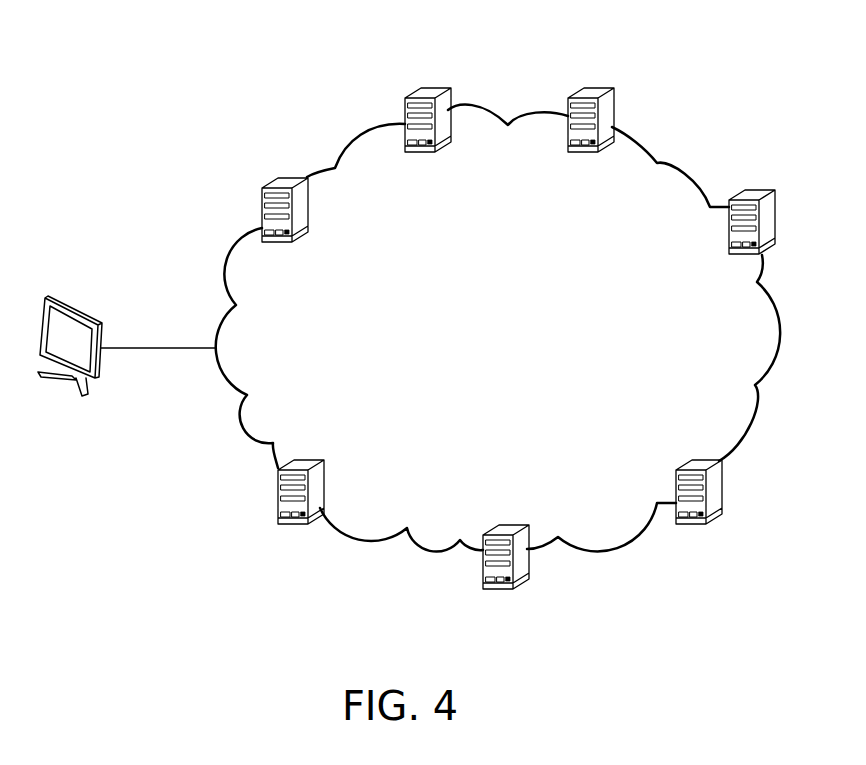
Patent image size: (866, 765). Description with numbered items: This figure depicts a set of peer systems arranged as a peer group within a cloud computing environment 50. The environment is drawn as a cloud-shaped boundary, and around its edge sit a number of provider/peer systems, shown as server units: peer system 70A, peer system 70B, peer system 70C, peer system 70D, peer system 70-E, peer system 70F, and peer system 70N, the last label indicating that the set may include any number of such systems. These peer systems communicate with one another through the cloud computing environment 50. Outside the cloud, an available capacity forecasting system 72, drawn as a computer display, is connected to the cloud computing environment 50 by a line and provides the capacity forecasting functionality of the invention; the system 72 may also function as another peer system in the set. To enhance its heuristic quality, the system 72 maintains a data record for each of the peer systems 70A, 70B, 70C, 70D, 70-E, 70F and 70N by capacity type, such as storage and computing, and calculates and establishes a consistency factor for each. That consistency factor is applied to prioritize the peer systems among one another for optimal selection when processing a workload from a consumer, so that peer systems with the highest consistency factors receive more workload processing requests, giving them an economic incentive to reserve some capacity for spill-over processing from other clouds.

The cloud computing environment 50 is at (782, 334).
The available capacity forecasting system 72 is at (46, 297).
The peer system 70A is at (276, 186).
The peer system 70B is at (418, 92).
The peer system 70C is at (581, 92).
The peer system 70D is at (744, 195).
The peer system 70-E is at (703, 524).
The peer system 70F is at (512, 593).
The peer system 70N is at (305, 525).